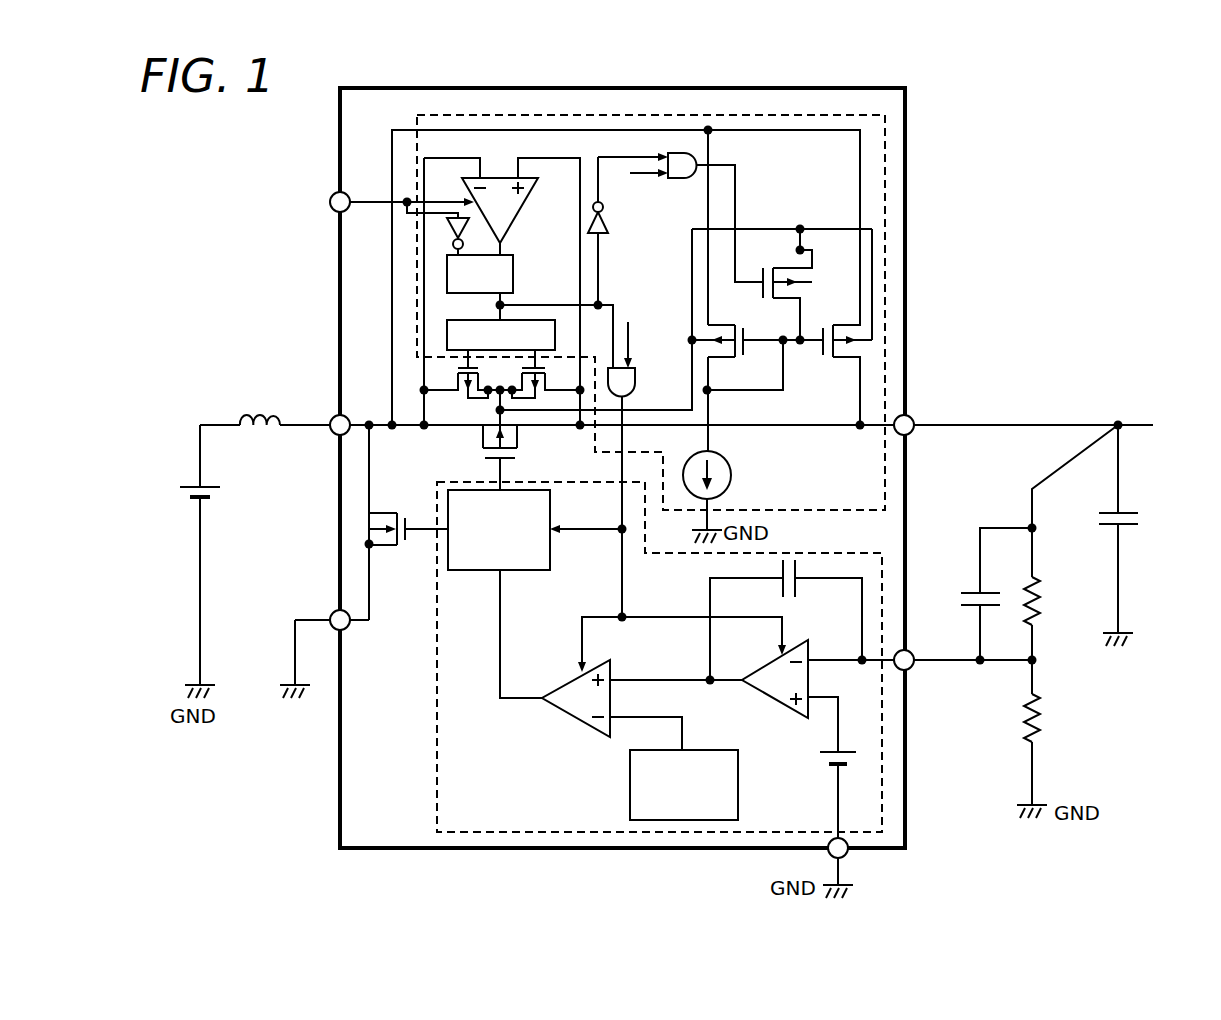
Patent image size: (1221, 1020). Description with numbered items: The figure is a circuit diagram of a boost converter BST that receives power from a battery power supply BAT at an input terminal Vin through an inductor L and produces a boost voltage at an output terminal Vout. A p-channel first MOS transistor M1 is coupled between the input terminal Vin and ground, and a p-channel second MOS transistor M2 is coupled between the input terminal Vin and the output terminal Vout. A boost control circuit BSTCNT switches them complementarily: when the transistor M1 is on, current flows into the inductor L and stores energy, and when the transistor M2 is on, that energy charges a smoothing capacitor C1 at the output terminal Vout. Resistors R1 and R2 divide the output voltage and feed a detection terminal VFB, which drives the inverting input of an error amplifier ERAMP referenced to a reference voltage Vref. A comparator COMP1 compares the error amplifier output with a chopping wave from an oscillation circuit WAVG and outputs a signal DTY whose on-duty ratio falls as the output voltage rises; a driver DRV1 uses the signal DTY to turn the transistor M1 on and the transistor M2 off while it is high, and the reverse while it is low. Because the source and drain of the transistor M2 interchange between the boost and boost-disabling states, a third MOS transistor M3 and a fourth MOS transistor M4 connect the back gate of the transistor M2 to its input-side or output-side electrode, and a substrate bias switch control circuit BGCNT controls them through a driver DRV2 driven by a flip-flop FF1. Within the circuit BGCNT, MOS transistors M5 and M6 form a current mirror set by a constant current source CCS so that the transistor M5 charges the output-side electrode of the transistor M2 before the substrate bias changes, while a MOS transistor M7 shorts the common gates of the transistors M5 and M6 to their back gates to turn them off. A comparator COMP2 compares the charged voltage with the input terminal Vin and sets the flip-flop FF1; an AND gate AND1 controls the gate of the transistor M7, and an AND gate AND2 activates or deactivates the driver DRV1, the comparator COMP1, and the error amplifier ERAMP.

The boost converter BST is at (912, 115).
The substrate bias switch control circuit BGCNT is at (886, 190).
The boost control circuit BSTCNT is at (886, 556).
The comparator COMP2 is at (500, 178).
The flip-flop FF1 is at (447, 268).
The driver DRV2 is at (501, 335).
The third MOS transistor M3 is at (456, 374).
The fourth MOS transistor M4 is at (534, 374).
The second MOS transistor M2 is at (520, 447).
The first MOS transistor M1 is at (394, 514).
The driver DRV1 is at (535, 530).
The output signal DTY is at (500, 652).
The comparator COMP1 is at (566, 714).
The oscillation circuit WAVG is at (630, 792).
The error amplifier ERAMP is at (770, 700).
The reference voltage Vref is at (857, 762).
The AND gate AND1 is at (698, 156).
The AND gate AND2 is at (635, 380).
The MOS transistor M7 is at (782, 284).
The MOS transistor M6 is at (757, 356).
The MOS transistor M5 is at (842, 375).
The constant current source CCS is at (733, 468).
The battery power supply BAT is at (190, 482).
The inductor L is at (258, 408).
The input terminal Vin is at (332, 434).
The output terminal Vout is at (912, 417).
The detection terminal VFB is at (914, 668).
The smoothing capacitor C1 is at (1137, 535).
The resistor R1 is at (1039, 542).
The resistor R2 is at (1046, 739).